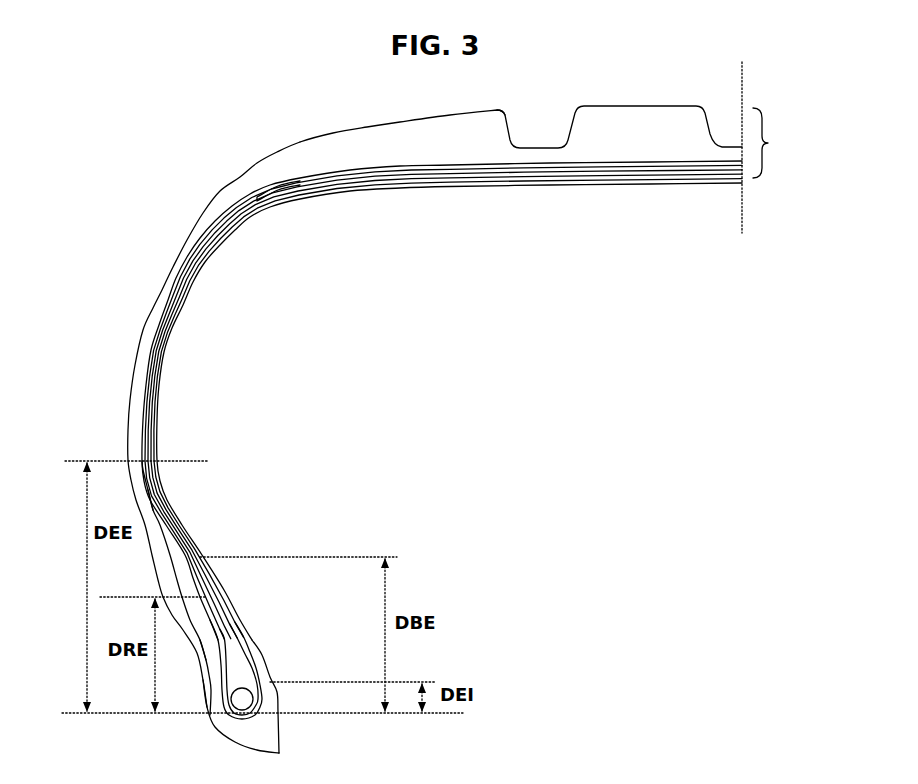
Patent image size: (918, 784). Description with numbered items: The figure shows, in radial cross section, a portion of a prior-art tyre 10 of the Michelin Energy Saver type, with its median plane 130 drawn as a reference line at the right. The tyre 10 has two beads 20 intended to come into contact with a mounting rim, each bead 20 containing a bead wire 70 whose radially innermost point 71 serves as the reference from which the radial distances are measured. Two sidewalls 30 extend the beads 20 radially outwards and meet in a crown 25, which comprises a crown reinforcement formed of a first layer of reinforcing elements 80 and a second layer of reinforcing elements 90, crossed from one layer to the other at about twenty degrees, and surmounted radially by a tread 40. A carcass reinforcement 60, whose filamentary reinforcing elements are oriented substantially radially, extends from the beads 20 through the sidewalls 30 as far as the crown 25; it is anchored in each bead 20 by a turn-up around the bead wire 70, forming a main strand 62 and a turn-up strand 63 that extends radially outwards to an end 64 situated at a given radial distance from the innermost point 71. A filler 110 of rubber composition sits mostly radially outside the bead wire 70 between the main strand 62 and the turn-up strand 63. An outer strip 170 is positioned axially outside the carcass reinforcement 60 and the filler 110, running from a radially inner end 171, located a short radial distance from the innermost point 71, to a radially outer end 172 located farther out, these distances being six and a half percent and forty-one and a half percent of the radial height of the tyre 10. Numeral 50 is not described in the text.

The tyre 10 is at (186, 186).
The bead 20 is at (207, 678).
The crown 25 is at (780, 143).
The sidewall 30 is at (148, 345).
The tread 40 is at (496, 147).
The carcass ply 50 is at (158, 367).
The carcass reinforcement 60 is at (149, 415).
The main strand 62 is at (246, 618).
The turn-up strand 63 is at (220, 639).
The end of turn-up strand 64 is at (196, 594).
The bead wire 70 is at (240, 704).
The radially innermost point of the bead wire 71 is at (247, 727).
The first layer of reinforcing elements 80 is at (322, 178).
The second layer of reinforcing elements 90 is at (357, 172).
The filler 110 is at (258, 647).
The median plane 130 is at (745, 228).
The outer strip 170 is at (178, 525).
The radially inner end of the outer strip 171 is at (220, 684).
The radially outer end of the outer strip 172 is at (136, 457).